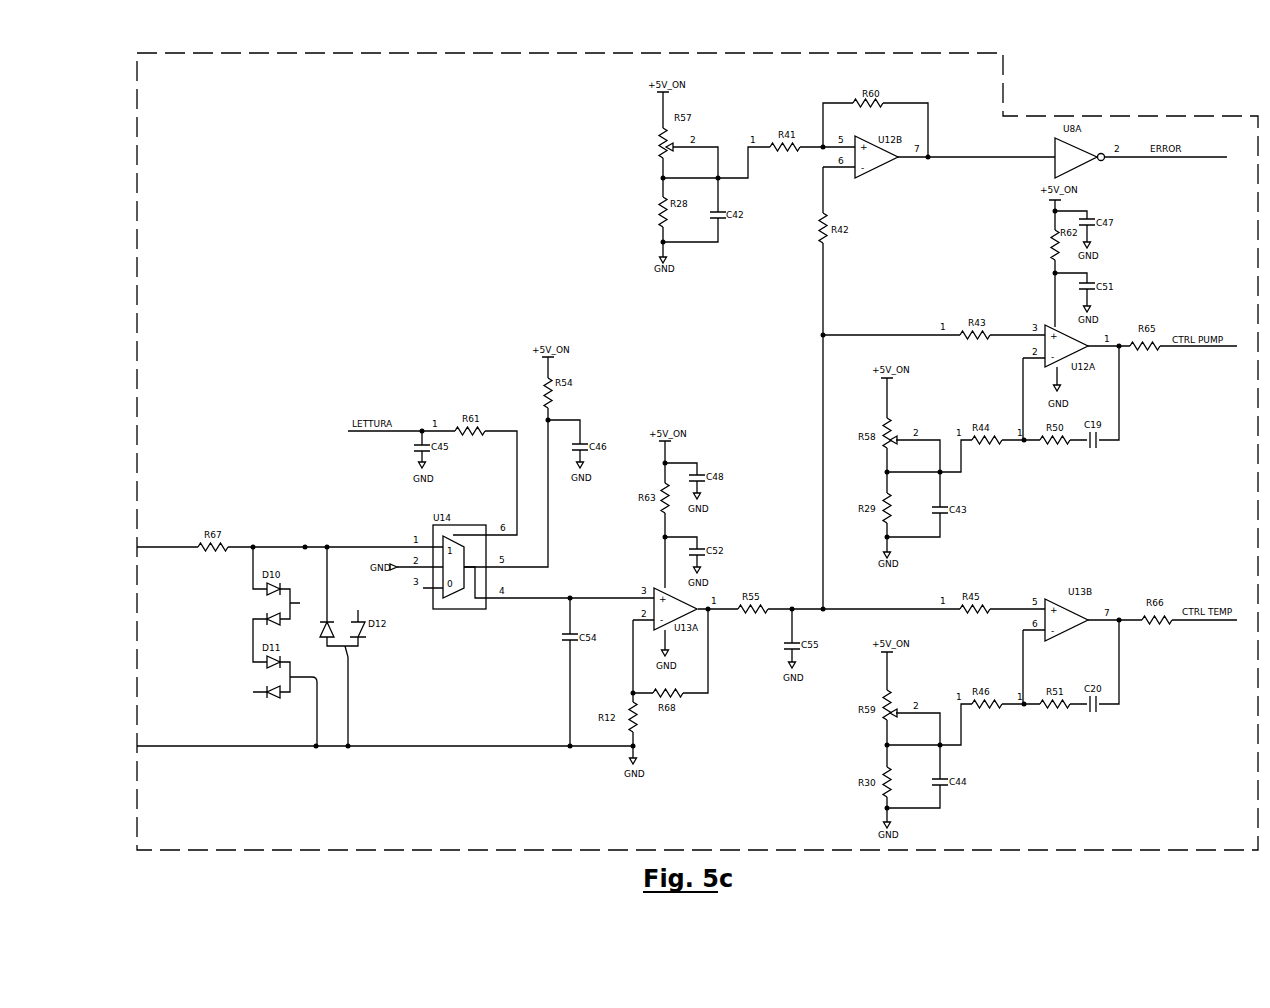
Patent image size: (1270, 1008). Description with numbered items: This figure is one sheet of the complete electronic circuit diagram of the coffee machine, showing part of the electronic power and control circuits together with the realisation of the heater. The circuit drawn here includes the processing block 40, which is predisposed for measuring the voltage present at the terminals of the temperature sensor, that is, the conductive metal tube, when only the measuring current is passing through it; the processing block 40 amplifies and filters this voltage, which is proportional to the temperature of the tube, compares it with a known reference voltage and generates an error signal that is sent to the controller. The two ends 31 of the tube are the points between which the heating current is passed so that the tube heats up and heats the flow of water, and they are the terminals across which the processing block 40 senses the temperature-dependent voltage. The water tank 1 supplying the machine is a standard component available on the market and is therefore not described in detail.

The processing block 40 is at (1097, 115).
The ends of the tube 31 is at (169, 550).
The water tank 1 is at (976, 150).